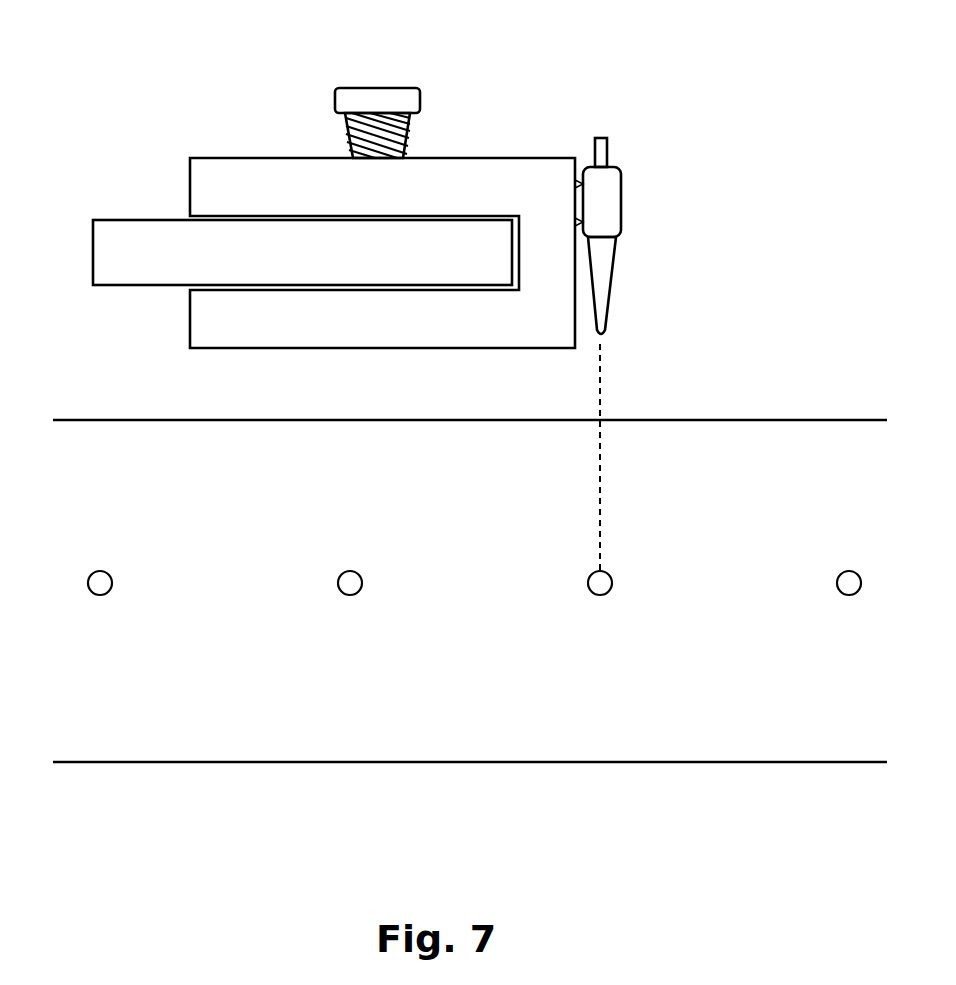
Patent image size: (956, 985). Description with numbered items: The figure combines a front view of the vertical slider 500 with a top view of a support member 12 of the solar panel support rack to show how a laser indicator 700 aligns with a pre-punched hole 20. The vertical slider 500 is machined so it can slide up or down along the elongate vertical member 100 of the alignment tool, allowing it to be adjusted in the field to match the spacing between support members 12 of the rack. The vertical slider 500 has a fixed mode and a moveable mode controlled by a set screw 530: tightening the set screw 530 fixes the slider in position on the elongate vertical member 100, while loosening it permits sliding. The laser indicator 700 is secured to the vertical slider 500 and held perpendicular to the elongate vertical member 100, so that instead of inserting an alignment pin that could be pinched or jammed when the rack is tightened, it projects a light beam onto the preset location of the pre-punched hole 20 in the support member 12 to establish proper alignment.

The support member 12 is at (168, 715).
The pre-punched hole 20 is at (612, 593).
The elongate vertical member 100 is at (110, 218).
The vertical slider 500 is at (197, 156).
The set screw 530 is at (420, 90).
The laser indicator 700 is at (618, 167).